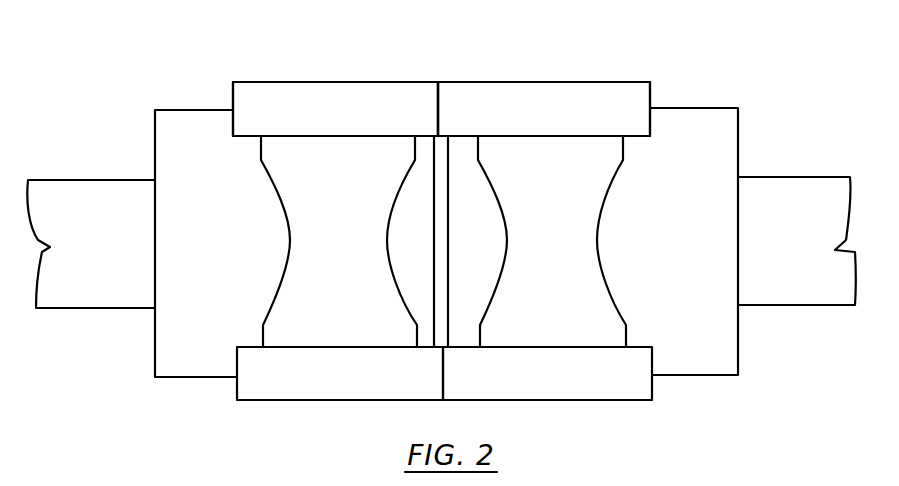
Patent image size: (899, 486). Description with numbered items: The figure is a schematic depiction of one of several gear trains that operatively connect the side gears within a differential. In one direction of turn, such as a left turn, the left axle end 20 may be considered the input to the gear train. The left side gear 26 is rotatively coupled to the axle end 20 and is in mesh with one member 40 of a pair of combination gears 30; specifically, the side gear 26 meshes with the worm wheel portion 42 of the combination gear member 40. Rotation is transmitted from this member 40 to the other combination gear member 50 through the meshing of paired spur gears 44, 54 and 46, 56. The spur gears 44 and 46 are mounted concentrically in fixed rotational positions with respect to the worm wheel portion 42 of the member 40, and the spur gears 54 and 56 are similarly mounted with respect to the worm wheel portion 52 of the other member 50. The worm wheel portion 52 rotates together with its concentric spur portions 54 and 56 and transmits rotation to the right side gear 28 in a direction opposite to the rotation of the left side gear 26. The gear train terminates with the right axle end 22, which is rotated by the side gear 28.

The left axle end 20 is at (84, 254).
The right axle end 22 is at (777, 249).
The left side gear 26 is at (199, 287).
The right side gear 28 is at (657, 284).
The combination gears 30 is at (421, 69).
The combination gear member 40 is at (231, 93).
The worm wheel portion 42 is at (327, 254).
The spur gear 44 is at (329, 120).
The spur gear 46 is at (325, 389).
The combination gear member 50 is at (653, 94).
The worm wheel portion 52 is at (537, 250).
The spur gear 54 is at (529, 119).
The spur gear 56 is at (532, 387).